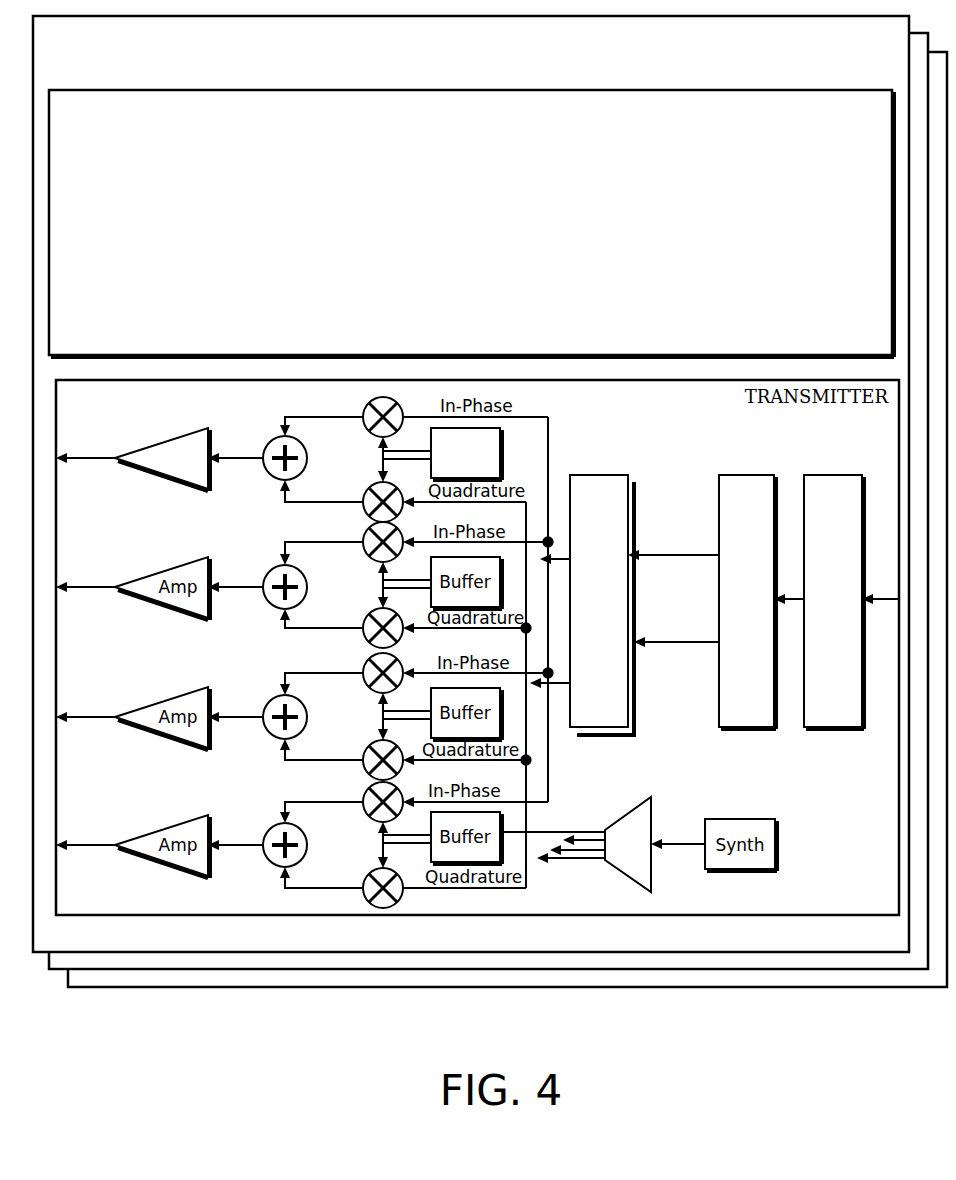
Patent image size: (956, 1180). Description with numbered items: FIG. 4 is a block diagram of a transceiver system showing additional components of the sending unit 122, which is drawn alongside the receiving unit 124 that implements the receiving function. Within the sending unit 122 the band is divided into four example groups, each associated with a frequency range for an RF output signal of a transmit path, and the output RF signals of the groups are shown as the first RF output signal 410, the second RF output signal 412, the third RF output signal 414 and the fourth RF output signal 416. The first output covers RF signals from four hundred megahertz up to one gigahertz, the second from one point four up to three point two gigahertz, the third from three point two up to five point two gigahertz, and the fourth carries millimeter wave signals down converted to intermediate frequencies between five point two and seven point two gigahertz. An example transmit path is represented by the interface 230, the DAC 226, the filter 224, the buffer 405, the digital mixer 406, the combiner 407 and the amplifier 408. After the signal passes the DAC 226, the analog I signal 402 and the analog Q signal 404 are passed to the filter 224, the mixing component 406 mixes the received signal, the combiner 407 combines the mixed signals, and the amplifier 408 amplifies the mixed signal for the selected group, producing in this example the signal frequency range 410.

The sending unit 122 is at (93, 915).
The receiving unit 124 is at (471, 223).
The filter 224 is at (603, 606).
The DAC 226 is at (747, 602).
The interface 230 is at (834, 602).
The analog I signal 402 is at (669, 553).
The analog Q signal 404 is at (688, 645).
The buffer 405 is at (436, 427).
The digital mixer 406 is at (381, 396).
The combiner 407 is at (270, 440).
The amplifier 408 is at (158, 444).
The first RF output signal 410 is at (84, 460).
The second RF output signal 412 is at (84, 586).
The third RF output signal 414 is at (84, 716).
The fourth RF output signal 416 is at (84, 844).